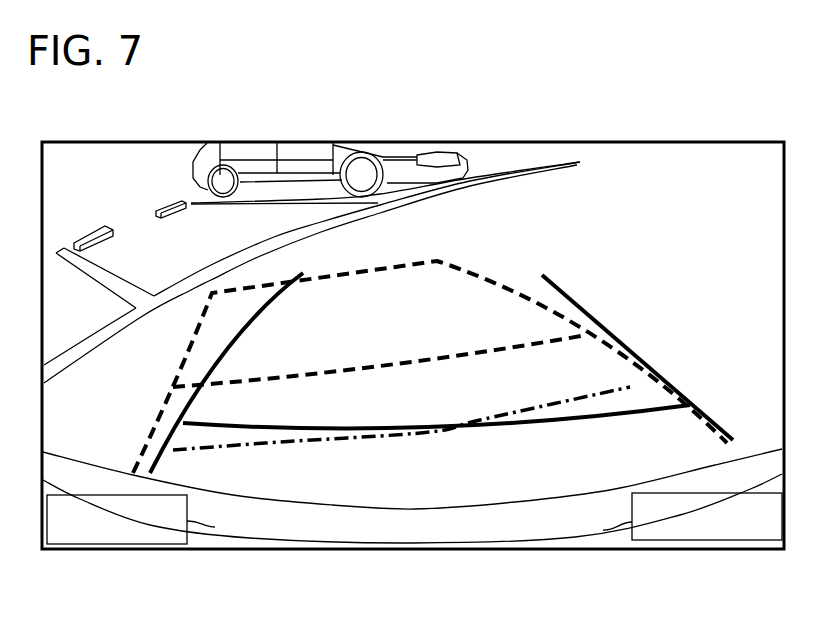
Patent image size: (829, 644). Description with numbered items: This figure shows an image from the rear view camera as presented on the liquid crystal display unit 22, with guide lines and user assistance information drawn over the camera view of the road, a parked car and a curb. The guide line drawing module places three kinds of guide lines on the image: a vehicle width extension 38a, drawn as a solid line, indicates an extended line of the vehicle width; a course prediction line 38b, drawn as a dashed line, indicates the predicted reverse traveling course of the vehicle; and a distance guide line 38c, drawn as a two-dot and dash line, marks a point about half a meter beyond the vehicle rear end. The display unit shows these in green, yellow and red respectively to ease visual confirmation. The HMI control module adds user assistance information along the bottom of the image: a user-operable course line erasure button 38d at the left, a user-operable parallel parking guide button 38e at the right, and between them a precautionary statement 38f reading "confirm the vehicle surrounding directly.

The liquid crystal display unit 22 is at (614, 142).
The vehicle width extension 38a is at (588, 305).
The course prediction line 38b is at (468, 263).
The distance guide line 38c is at (555, 402).
The course line erasure button 38d is at (113, 545).
The parallel parking guide button 38e is at (692, 541).
The precautionary statement 38f is at (412, 541).